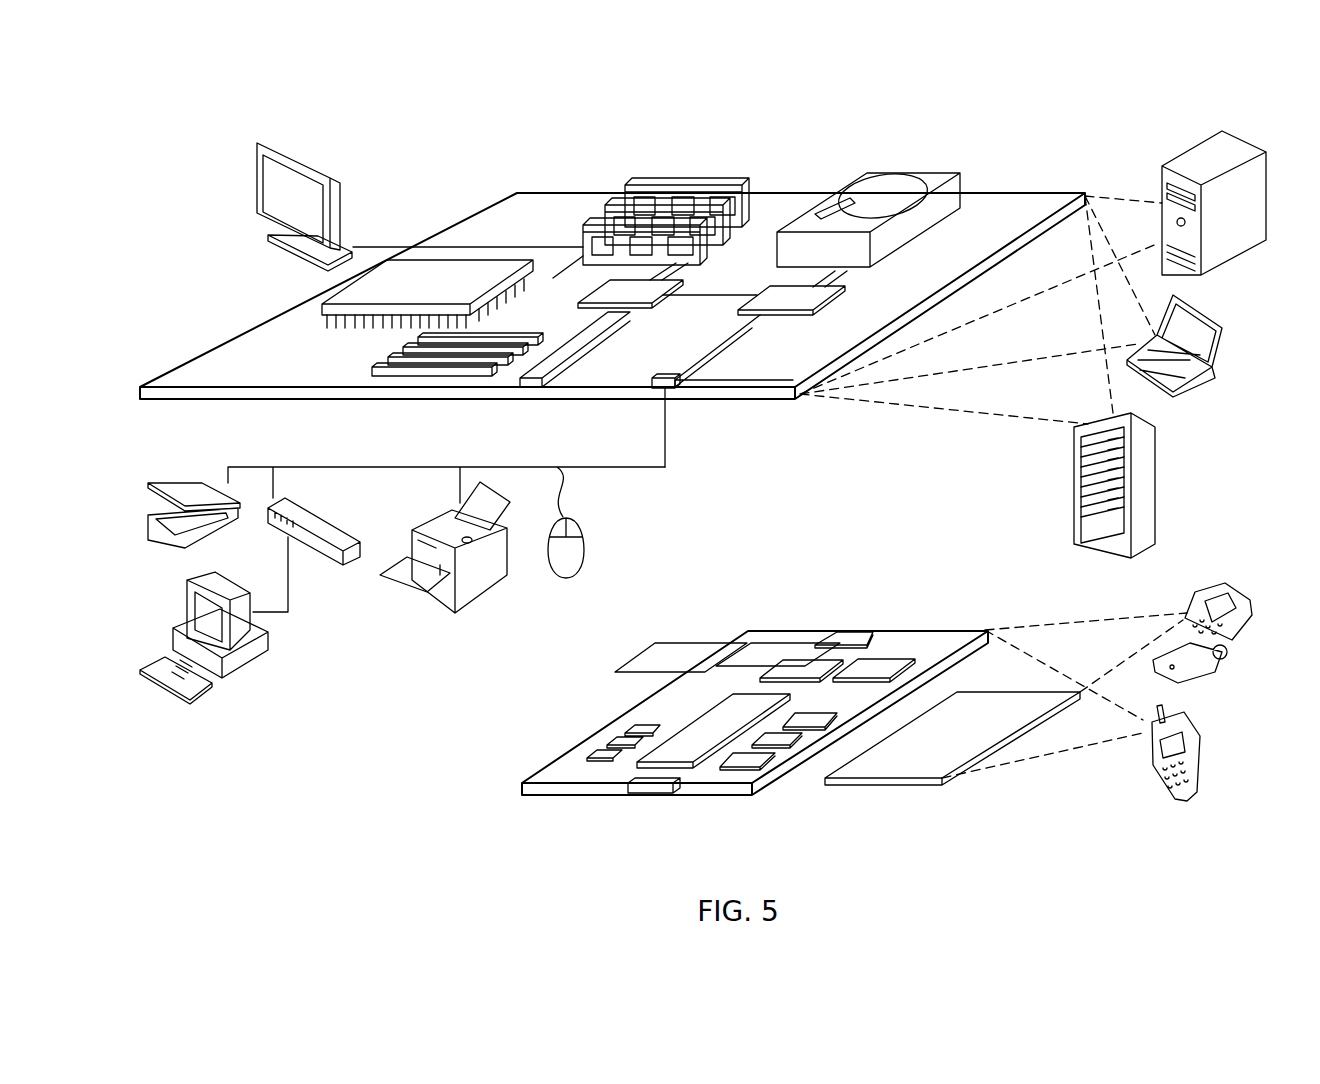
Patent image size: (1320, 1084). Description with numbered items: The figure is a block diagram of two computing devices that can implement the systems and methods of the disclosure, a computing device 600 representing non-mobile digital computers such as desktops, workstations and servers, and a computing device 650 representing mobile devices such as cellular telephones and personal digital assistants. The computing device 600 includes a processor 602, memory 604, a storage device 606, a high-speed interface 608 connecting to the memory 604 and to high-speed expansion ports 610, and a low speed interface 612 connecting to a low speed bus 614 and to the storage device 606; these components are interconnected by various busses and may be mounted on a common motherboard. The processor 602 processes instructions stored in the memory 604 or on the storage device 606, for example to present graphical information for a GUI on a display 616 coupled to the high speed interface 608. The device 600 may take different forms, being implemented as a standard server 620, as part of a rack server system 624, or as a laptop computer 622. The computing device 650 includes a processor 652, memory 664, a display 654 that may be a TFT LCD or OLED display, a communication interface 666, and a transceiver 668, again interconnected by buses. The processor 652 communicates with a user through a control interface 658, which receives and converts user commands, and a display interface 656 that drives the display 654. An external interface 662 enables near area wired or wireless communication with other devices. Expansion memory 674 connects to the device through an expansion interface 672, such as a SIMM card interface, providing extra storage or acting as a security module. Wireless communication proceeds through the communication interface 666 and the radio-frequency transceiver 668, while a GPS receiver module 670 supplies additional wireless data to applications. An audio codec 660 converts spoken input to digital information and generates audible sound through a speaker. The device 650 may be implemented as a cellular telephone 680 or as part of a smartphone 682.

The computing device 600 is at (440, 156).
The processor 602 is at (330, 308).
The memory 604 is at (633, 185).
The storage device 606 is at (862, 175).
The high-speed interface 608 is at (608, 292).
The high-speed expansion ports 610 is at (392, 363).
The low speed interface 612 is at (773, 292).
The low speed bus 614 is at (706, 399).
The display 616 is at (257, 145).
The standard server 620 is at (1162, 185).
The laptop computer 622 is at (1229, 321).
The rack server system 624 is at (1074, 508).
The computing device 650 is at (490, 800).
The processor 652 is at (688, 752).
The display 654 is at (912, 770).
The display interface 656 is at (758, 758).
The control interface 658 is at (790, 737).
The audio codec 660 is at (808, 717).
The external interface 662 is at (655, 783).
The memory 664 is at (610, 744).
The communication interface 666 is at (802, 667).
The transceiver 668 is at (875, 662).
The GPS receiver module 670 is at (848, 633).
The expansion interface 672 is at (733, 642).
The expansion memory 674 is at (663, 642).
The cellular telephone 680 is at (1197, 590).
The smartphone 682 is at (1150, 760).